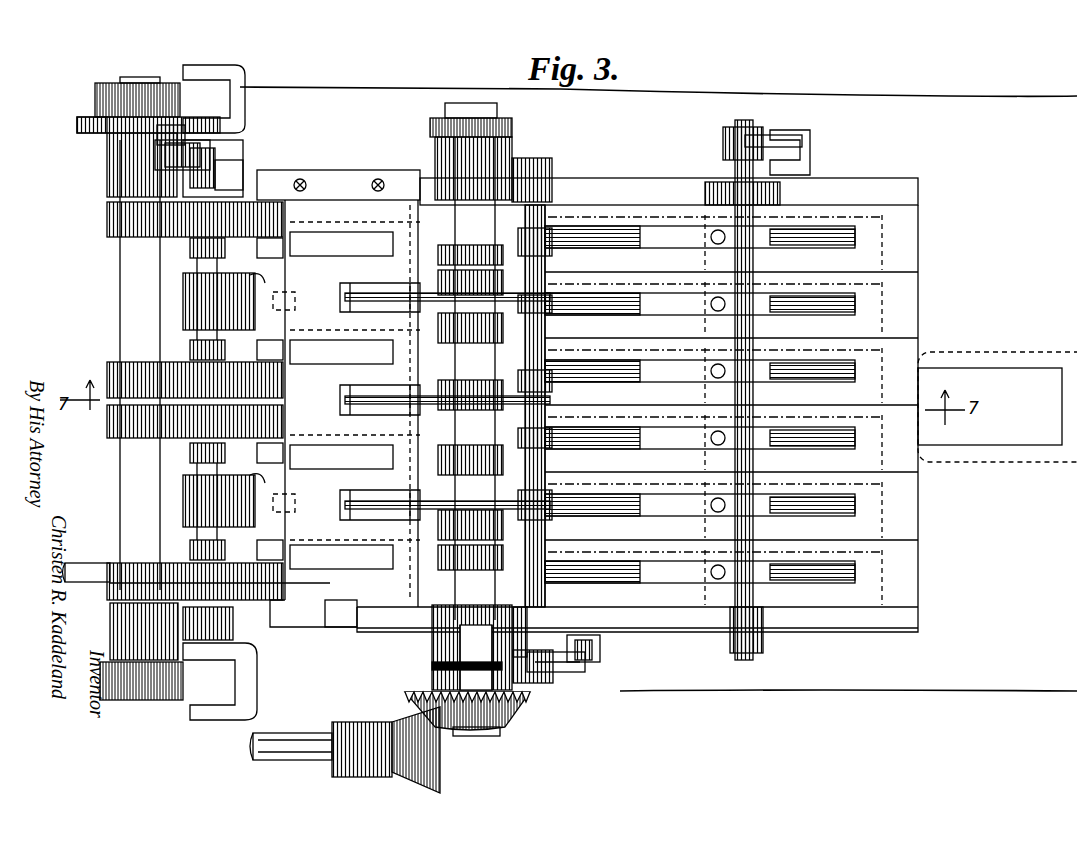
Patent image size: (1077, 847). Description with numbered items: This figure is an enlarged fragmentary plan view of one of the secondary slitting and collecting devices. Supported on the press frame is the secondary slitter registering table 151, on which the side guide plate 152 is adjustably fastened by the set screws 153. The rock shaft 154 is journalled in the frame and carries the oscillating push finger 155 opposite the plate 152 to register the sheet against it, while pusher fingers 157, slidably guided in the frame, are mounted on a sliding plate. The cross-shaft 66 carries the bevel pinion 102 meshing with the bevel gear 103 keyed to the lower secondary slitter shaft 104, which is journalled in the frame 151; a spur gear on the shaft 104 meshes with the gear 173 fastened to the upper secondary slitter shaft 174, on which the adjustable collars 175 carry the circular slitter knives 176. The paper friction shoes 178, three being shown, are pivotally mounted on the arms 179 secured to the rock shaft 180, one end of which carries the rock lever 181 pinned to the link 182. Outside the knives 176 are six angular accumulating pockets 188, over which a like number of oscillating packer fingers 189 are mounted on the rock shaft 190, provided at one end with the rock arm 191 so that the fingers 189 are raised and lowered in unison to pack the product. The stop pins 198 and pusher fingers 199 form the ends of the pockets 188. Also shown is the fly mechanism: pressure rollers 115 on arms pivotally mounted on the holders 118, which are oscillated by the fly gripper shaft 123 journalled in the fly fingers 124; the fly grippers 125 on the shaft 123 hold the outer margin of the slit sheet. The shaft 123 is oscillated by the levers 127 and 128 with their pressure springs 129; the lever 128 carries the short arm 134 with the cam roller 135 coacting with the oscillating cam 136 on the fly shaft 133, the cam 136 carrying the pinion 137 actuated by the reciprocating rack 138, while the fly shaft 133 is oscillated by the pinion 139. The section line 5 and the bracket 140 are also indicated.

The section line 5 is at (343, 214).
The cross-shaft 66 is at (285, 737).
The bevel pinion 102 is at (432, 780).
The bevel gear 103 is at (515, 722).
The lower secondary slitter shaft 104 is at (472, 738).
The pressure rollers 115 is at (295, 300).
The holders 118 is at (255, 322).
The fly gripper shaft 123 is at (210, 145).
The fly fingers 124 is at (341, 400).
The fly grippers 125 is at (190, 248).
The lever 127 is at (233, 625).
The lever 128 is at (260, 150).
The pressure springs 129 is at (150, 178).
The fly shaft 133 is at (138, 77).
The short arm 134 is at (120, 150).
The cam roller 135 is at (185, 130).
The oscillating cam 136 is at (80, 118).
The pinion 137 is at (103, 117).
The rack 138 is at (205, 80).
The pinion 139 is at (115, 700).
The bracket 140 is at (220, 681).
The secondary slitter registering table 151 is at (296, 626).
The side guide plate 152 is at (345, 160).
The set screws 153 is at (300, 178).
The rock shaft 154 is at (95, 560).
The push finger 155 is at (348, 627).
The pusher fingers 157 is at (245, 367).
The gear 173 is at (512, 128).
The upper secondary slitter shaft 174 is at (470, 668).
The adjustable collars 175 is at (470, 392).
The circular slitter knives 176 is at (470, 420).
The paper friction shoes 178 is at (396, 284).
The arms 179 is at (400, 312).
The rock shaft 180 is at (540, 470).
The rock lever 181 is at (560, 672).
The link 182 is at (600, 650).
The accumulating pockets 188 is at (700, 411).
The packer fingers 189 is at (655, 250).
The rock shaft 190 is at (755, 260).
The rock arm 191 is at (770, 135).
The stop pins 198 is at (713, 244).
The pusher fingers 199 is at (518, 236).